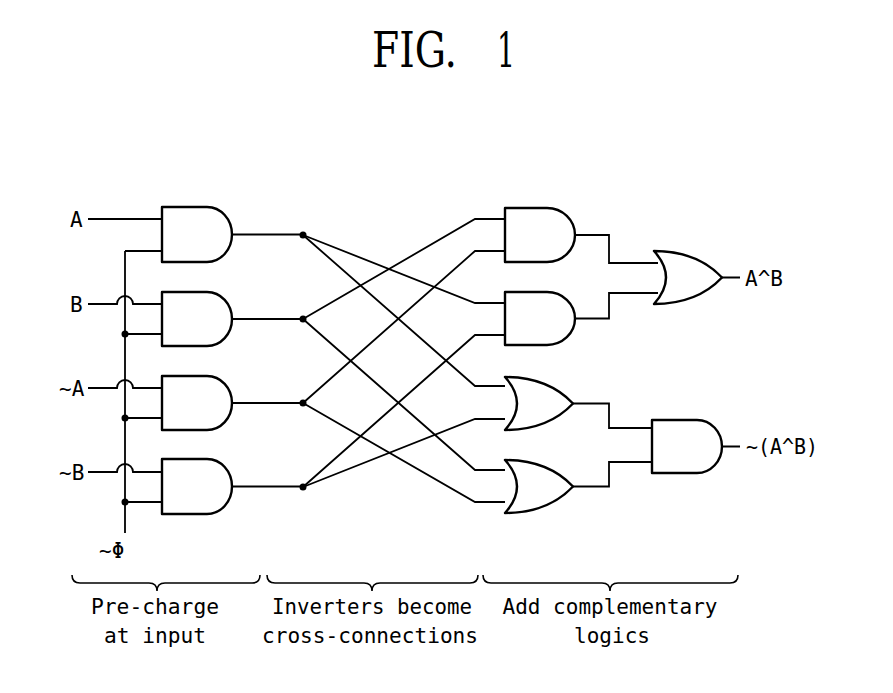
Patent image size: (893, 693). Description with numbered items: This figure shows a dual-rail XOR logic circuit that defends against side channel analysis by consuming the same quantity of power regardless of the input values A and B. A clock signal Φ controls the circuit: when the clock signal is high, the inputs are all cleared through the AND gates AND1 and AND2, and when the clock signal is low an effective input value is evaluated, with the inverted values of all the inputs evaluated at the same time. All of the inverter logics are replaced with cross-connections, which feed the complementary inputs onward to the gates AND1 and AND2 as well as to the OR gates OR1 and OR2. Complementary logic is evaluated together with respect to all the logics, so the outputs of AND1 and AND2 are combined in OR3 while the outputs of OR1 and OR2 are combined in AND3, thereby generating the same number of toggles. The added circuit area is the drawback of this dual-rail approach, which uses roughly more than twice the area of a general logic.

The AND gate AND1 is at (540, 235).
The AND gate AND2 is at (540, 318).
The third AND gate AND3 is at (687, 446).
The first OR gate OR1 is at (539, 403).
The second OR gate OR2 is at (539, 486).
The third OR gate OR3 is at (688, 277).